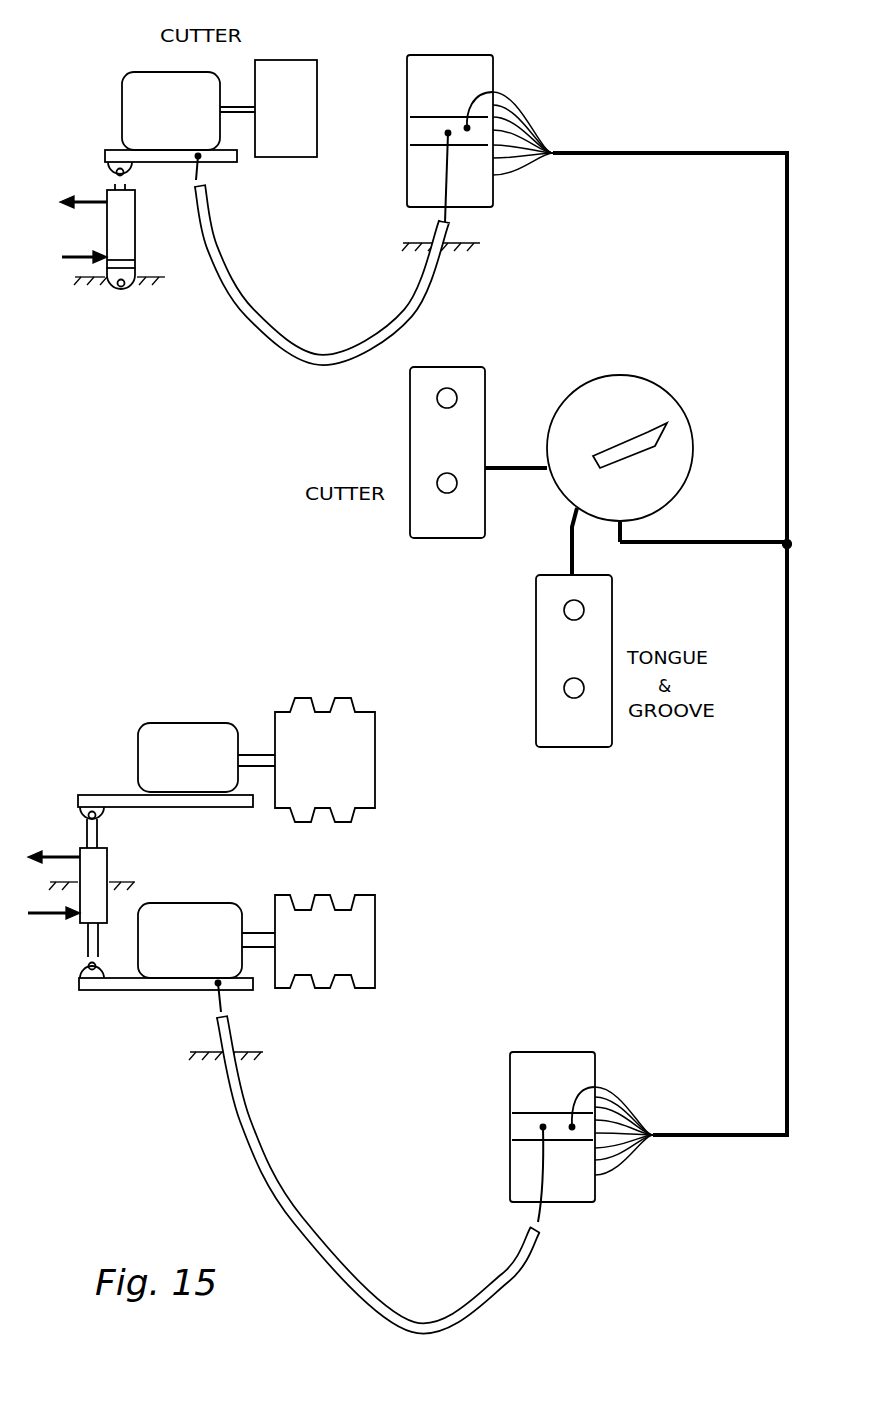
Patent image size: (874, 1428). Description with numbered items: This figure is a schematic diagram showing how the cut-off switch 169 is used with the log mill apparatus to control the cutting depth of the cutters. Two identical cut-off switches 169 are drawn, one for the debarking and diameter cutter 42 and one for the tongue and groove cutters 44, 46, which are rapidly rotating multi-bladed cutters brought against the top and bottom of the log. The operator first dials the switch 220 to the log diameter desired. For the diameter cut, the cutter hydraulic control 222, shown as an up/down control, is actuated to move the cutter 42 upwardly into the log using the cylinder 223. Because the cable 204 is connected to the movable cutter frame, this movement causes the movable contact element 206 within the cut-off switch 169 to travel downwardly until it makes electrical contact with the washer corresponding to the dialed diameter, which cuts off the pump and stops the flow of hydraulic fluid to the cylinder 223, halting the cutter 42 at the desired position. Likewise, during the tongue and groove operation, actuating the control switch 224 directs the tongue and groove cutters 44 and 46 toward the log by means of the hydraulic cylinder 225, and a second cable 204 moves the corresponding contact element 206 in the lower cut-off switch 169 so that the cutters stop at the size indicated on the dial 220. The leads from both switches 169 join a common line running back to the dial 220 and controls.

The cutter 42 is at (306, 70).
The tongue cutter 44 is at (285, 718).
The groove cutter 46 is at (283, 902).
The cut-off switch 169 is at (504, 50).
The cable 204 is at (446, 186).
The contact element 206 is at (417, 134).
The switch 220 is at (634, 381).
The cutter hydraulic control 222 is at (470, 378).
The cylinder 223 is at (133, 244).
The control switch 224 is at (535, 603).
The hydraulic cylinder 225 is at (100, 863).